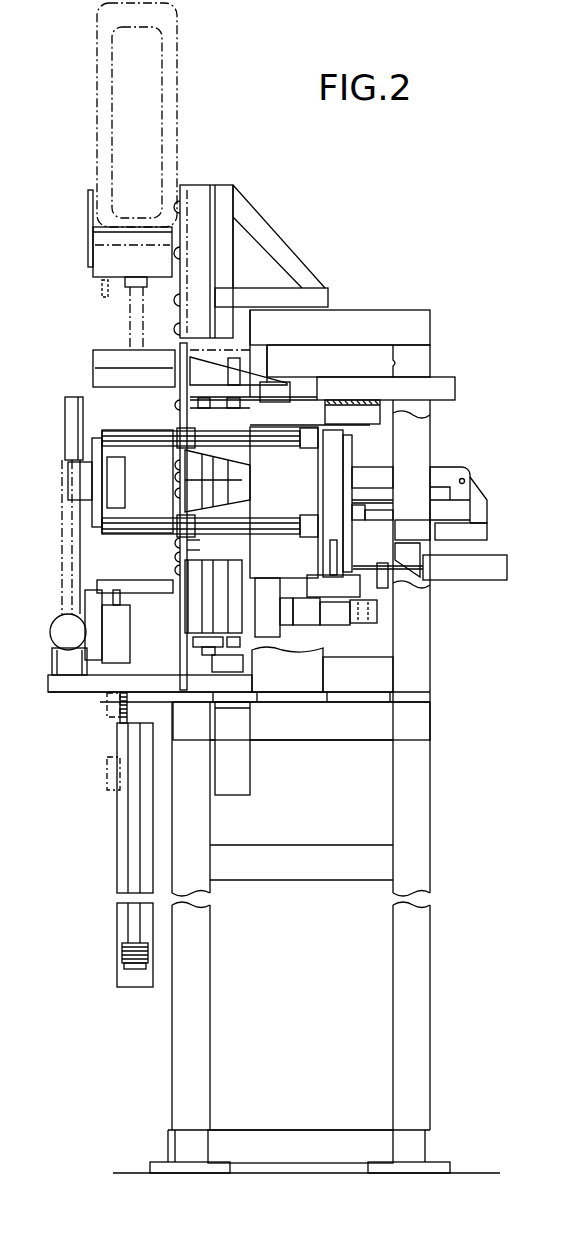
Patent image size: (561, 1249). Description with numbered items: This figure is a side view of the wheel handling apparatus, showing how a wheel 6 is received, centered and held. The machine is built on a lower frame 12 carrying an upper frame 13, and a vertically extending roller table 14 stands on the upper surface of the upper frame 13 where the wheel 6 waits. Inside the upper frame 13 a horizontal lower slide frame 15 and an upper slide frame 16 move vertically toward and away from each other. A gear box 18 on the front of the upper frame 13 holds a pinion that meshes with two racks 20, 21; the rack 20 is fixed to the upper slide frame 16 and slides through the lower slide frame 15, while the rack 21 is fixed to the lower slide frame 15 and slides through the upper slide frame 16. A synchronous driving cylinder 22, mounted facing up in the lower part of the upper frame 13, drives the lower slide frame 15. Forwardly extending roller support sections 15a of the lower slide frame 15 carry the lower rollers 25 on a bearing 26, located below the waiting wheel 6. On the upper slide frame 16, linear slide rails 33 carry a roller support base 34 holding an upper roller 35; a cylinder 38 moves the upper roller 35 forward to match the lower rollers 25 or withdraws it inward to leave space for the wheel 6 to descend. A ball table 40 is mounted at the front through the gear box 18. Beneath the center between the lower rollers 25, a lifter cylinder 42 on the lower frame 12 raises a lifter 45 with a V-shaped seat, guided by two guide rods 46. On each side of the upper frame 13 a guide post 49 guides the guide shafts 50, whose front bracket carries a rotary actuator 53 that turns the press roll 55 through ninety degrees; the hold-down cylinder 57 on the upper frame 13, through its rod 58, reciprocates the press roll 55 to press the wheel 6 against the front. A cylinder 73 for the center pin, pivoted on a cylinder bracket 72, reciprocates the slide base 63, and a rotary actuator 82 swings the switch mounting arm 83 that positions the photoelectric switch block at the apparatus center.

The wheel 6 is at (97, 20).
The lower frame 12 is at (442, 839).
The upper frame 13 is at (445, 337).
The roller table 14 is at (210, 188).
The lower slide frame 15 is at (235, 645).
The roller support sections 15a is at (177, 646).
The upper slide frame 16 is at (430, 417).
The gear box 18 is at (178, 545).
The rack 20 is at (178, 405).
The rack 21 is at (365, 400).
The synchronous driving cylinder 22 is at (245, 787).
The lower rollers 25 is at (104, 587).
The bearing 26 is at (85, 605).
The linear slide rails 33 is at (395, 358).
The roller support base 34 is at (332, 400).
The upper roller 35 is at (92, 362).
The cylinder 38 is at (445, 385).
The ball table 40 is at (170, 502).
The lifter cylinder 42 is at (115, 923).
The lifter 45 is at (98, 277).
The guide rods 46 is at (118, 850).
The guide post 49 is at (305, 467).
The guide shaft 50 is at (125, 432).
The rotary actuator 53 is at (126, 462).
The press roll 55 is at (65, 415).
The hold-down cylinder 57 is at (483, 580).
The rod 58 is at (388, 573).
The slide base 63 is at (487, 506).
The cylinder bracket 72 is at (480, 530).
The cylinder for center pin 73 is at (449, 470).
The rotary actuator 82 is at (112, 655).
The switch mounting arm 83 is at (62, 543).